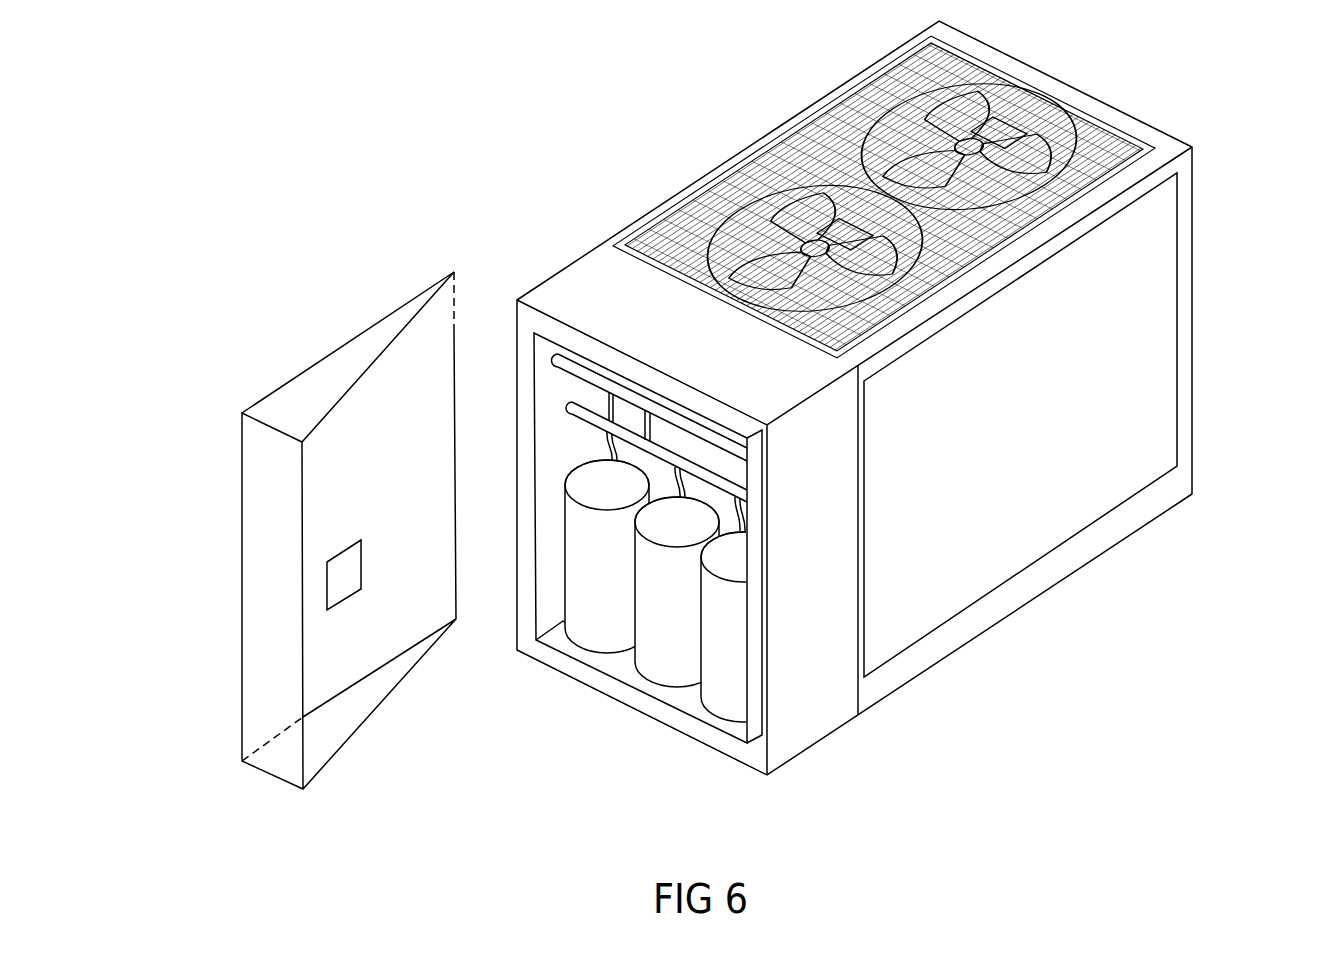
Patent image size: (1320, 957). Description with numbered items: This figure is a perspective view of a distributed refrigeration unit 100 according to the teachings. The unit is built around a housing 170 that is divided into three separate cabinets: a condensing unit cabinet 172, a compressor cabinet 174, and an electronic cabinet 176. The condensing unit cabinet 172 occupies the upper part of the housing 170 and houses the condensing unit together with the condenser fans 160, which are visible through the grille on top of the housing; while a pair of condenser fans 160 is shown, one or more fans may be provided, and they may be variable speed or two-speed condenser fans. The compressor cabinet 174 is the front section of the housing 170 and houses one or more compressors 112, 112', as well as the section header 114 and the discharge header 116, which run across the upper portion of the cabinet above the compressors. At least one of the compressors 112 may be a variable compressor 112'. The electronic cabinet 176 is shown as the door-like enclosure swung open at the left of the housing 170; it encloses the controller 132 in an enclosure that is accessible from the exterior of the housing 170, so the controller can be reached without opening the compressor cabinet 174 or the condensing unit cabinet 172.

The distributed refrigeration unit 100 is at (473, 93).
The compressors 112 is at (626, 613).
The variable compressor 112' is at (721, 675).
The section header 114 is at (572, 362).
The discharge header 116 is at (583, 415).
The controller 132 is at (338, 583).
The condenser fans 160 is at (938, 112).
The housing 170 is at (1201, 291).
The condensing unit cabinet 172 is at (1050, 567).
The compressor cabinet 174 is at (805, 705).
The electronic cabinet 176 is at (333, 368).